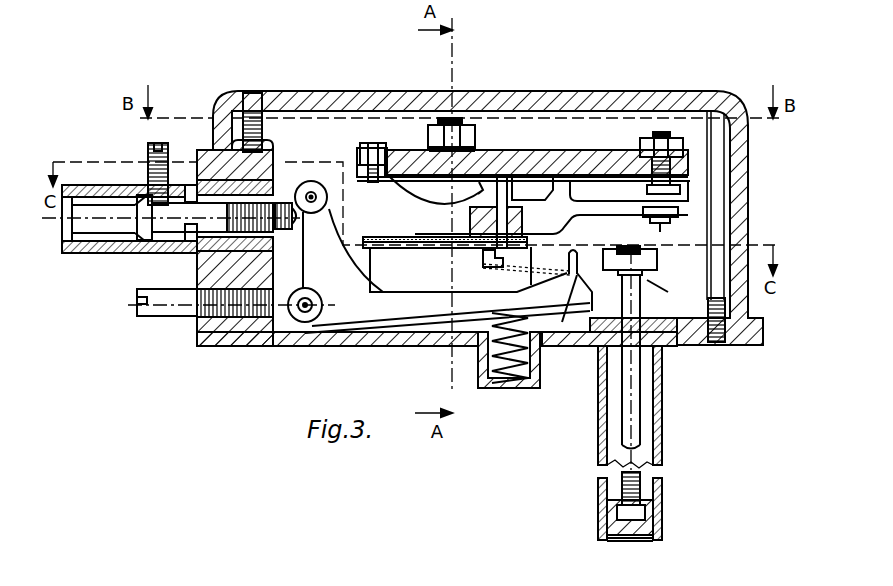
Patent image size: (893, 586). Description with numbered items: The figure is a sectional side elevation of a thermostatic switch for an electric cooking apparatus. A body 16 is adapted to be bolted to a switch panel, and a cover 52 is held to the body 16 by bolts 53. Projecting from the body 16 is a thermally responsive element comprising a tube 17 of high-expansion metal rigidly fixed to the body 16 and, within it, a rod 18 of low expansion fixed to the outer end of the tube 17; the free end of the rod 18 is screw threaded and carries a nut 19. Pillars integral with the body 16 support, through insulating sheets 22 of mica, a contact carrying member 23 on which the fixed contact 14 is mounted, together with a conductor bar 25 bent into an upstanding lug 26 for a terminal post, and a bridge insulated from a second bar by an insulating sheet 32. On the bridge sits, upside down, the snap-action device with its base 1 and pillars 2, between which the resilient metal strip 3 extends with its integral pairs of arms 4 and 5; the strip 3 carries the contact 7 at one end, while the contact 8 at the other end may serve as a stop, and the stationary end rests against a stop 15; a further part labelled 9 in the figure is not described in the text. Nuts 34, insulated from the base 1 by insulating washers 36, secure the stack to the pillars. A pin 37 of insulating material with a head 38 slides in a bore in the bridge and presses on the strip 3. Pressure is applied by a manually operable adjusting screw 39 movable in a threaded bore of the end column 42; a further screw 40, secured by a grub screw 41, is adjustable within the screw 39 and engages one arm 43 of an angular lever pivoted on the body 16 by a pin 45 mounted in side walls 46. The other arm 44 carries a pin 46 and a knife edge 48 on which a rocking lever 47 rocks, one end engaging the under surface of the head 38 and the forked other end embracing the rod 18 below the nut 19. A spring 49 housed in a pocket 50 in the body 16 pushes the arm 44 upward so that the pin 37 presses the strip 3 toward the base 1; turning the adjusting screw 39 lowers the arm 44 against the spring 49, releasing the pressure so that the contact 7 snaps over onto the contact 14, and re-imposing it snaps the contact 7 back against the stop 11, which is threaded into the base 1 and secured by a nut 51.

The base 1 is at (560, 175).
The pillar 2 is at (507, 168).
The resilient metal strip 3 is at (583, 180).
The rigid arm 4 is at (604, 195).
The arm 5 is at (406, 197).
The electrical contact 7 is at (683, 192).
The electrical contact 8 is at (360, 160).
The bracket 9 is at (536, 178).
The stop 11 is at (655, 131).
The contact 14 is at (680, 211).
The stop 15 is at (384, 148).
The body 16 is at (255, 346).
The tube 17 is at (666, 486).
The rod 18 is at (655, 436).
The nut 19 is at (656, 267).
The insulating sheet 22 is at (418, 248).
The contact carrying member 23 is at (592, 221).
The conductor bar 25 is at (385, 248).
The upstanding lug 26 is at (302, 182).
The insulating sheet 32 is at (403, 234).
The nut 34 is at (455, 124).
The insulating washer 36 is at (478, 151).
The pin 37 is at (512, 222).
The head 38 is at (488, 266).
The adjusting screw 39 is at (148, 253).
The screw 40 is at (315, 254).
The grub screw 41 is at (150, 152).
The end column 42 is at (197, 272).
The arm 43 is at (330, 224).
The arm 44 is at (350, 316).
The pin 45 is at (302, 322).
The pin 46 is at (567, 268).
The rocking lever 47 is at (590, 284).
The knife edge 48 is at (565, 323).
The spring 49 is at (513, 388).
The pocket 50 is at (480, 390).
The nut 51 is at (678, 137).
The cover 52 is at (512, 99).
The bolt 53 is at (257, 99).